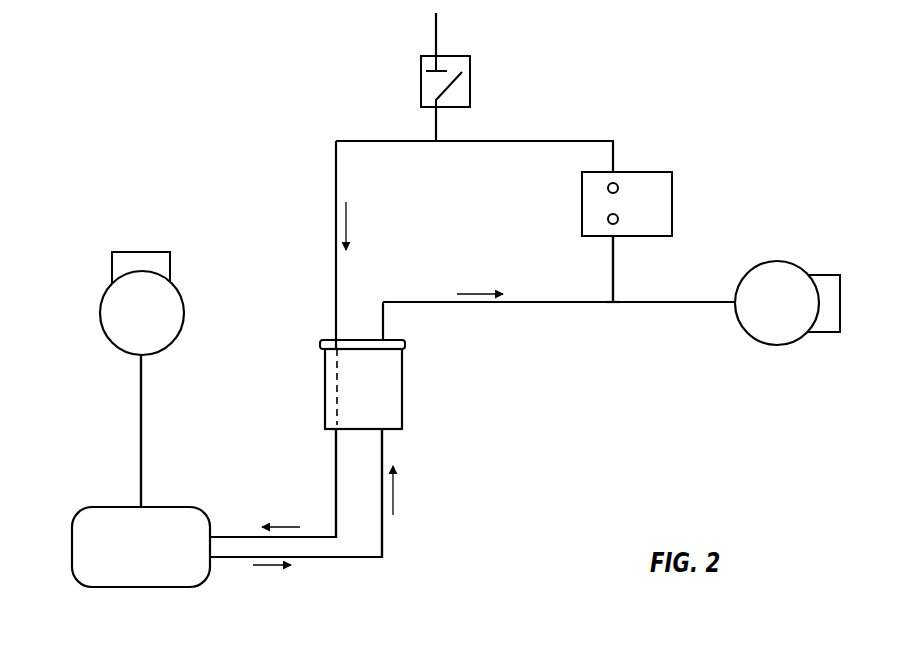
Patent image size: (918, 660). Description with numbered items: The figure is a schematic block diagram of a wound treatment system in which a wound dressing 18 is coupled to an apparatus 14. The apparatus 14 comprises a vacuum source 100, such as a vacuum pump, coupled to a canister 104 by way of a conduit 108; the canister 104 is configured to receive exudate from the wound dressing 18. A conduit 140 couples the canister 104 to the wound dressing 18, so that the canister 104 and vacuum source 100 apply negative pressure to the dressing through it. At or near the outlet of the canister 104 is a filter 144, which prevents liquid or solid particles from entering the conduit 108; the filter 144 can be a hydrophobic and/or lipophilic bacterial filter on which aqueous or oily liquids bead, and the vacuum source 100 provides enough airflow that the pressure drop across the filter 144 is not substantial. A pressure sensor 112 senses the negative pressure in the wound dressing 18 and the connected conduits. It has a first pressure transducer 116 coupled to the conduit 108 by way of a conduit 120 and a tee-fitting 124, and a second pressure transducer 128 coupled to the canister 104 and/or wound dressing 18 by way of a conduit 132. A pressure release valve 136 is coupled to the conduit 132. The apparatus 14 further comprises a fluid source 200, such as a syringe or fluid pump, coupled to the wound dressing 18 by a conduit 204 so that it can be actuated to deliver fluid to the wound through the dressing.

The apparatus 14 is at (202, 73).
The wound dressing 18 is at (117, 575).
The vacuum source 100 is at (762, 330).
The canister 104 is at (394, 400).
The conduit 108 is at (572, 303).
The pressure sensor 112 is at (672, 205).
The first pressure transducer 116 is at (607, 219).
The conduit 120 is at (612, 268).
The tee-fitting 124 is at (613, 303).
The second pressure transducer 128 is at (607, 188).
The conduit 132 is at (335, 458).
The pressure release valve 136 is at (470, 87).
The conduit 140 is at (383, 450).
The filter 144 is at (405, 345).
The fluid source 200 is at (178, 292).
The conduit 204 is at (142, 410).